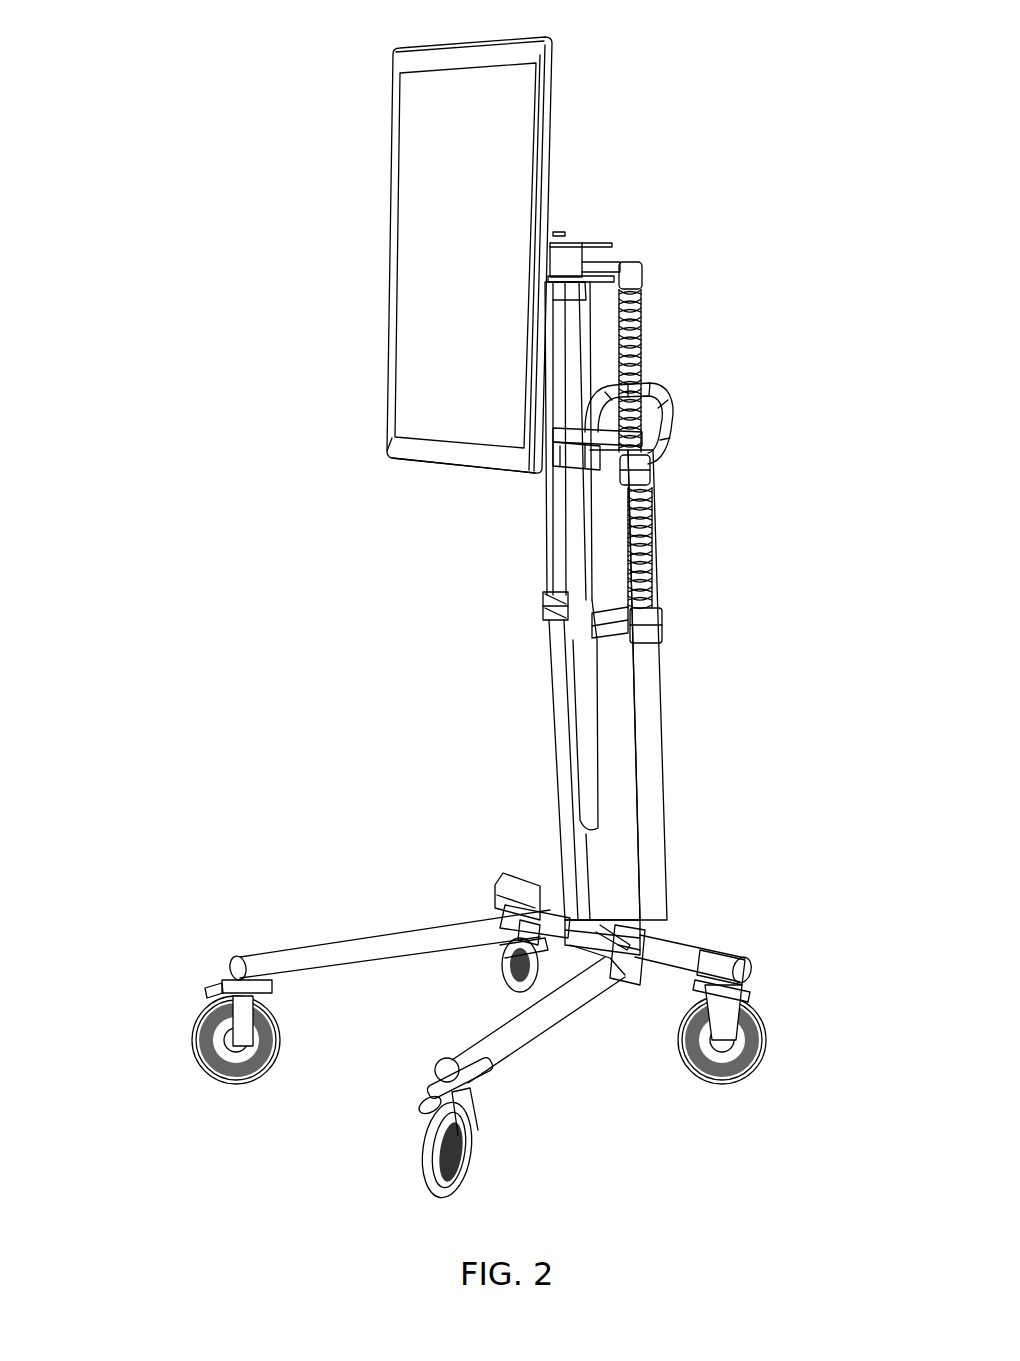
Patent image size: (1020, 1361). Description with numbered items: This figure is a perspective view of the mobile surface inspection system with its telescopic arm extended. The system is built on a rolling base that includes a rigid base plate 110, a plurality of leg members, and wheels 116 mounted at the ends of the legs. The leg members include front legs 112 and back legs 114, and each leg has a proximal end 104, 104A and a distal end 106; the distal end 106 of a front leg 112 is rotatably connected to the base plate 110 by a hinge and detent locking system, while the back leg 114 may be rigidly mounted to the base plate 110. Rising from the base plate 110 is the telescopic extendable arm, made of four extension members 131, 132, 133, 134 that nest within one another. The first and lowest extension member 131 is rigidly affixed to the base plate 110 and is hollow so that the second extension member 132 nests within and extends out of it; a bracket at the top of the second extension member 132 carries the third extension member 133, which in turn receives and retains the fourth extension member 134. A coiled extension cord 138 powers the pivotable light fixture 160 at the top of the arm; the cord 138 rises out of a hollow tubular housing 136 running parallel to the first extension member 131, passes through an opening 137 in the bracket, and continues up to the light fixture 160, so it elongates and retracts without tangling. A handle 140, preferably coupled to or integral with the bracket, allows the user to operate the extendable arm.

The proximal end 104 is at (485, 967).
The proximal end 104A is at (505, 885).
The distal end 106 is at (500, 930).
The base plate 110 is at (612, 985).
The front leg 112 is at (332, 948).
The back leg 114 is at (722, 960).
The wheel 116 is at (210, 1065).
The first extension member 131 is at (562, 650).
The second extension member 132 is at (552, 568).
The third extension member 133 is at (580, 693).
The fourth extension member 134 is at (573, 373).
The tubular housing 136 is at (648, 812).
The opening 137 is at (640, 475).
The extension cord 138 is at (647, 548).
The handle 140 is at (680, 412).
The light fixture 160 is at (435, 215).